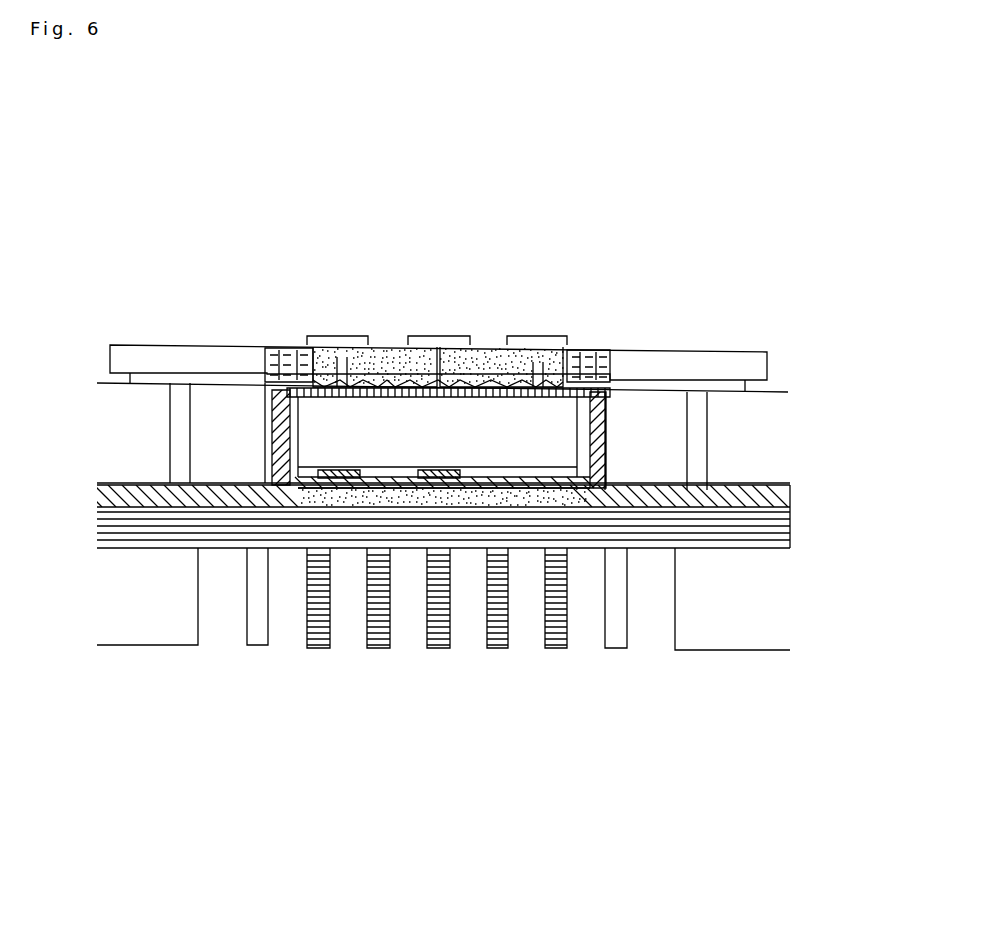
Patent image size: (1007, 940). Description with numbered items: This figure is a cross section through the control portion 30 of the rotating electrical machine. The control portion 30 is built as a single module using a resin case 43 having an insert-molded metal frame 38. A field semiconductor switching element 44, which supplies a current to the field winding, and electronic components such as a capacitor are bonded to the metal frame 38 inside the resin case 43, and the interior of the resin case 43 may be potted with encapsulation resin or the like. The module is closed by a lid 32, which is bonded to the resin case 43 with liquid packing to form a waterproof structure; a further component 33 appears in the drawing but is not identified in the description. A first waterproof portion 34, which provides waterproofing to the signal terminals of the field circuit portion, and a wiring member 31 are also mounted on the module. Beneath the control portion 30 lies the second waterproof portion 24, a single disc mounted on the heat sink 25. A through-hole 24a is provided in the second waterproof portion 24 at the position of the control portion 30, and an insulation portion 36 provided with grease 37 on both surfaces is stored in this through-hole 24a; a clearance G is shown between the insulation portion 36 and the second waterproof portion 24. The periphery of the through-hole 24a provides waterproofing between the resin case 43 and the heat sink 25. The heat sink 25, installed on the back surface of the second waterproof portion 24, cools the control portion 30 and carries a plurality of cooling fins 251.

The control portion 30 is at (227, 420).
The wiring member 31 is at (587, 362).
The lid 32 is at (375, 352).
The piezoelectric layer 33 is at (355, 372).
The first waterproof portion 34 is at (612, 382).
The insulation portion 36 is at (312, 490).
The grease 37 is at (300, 490).
The metal frame 38 is at (290, 477).
The resin case 43 is at (607, 460).
The field semiconductor switching element 44 is at (432, 470).
The clearance G is at (643, 485).
The second waterproof portion 24 is at (717, 498).
The through-hole 24a is at (300, 495).
The heat sink 25 is at (587, 527).
The cooling fin 251 is at (447, 617).